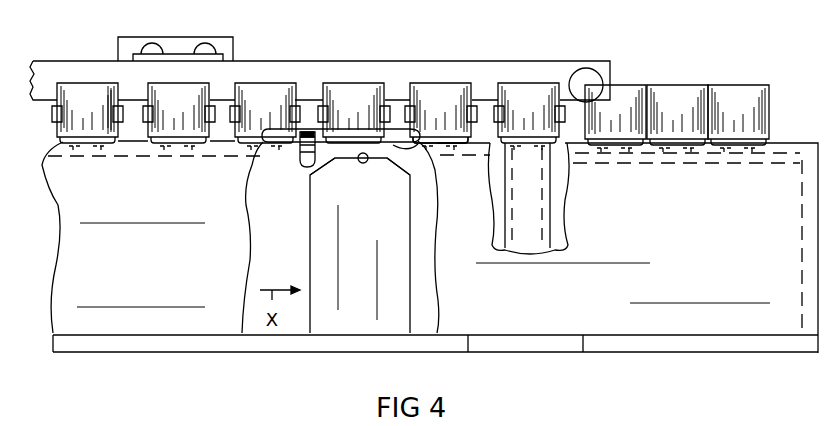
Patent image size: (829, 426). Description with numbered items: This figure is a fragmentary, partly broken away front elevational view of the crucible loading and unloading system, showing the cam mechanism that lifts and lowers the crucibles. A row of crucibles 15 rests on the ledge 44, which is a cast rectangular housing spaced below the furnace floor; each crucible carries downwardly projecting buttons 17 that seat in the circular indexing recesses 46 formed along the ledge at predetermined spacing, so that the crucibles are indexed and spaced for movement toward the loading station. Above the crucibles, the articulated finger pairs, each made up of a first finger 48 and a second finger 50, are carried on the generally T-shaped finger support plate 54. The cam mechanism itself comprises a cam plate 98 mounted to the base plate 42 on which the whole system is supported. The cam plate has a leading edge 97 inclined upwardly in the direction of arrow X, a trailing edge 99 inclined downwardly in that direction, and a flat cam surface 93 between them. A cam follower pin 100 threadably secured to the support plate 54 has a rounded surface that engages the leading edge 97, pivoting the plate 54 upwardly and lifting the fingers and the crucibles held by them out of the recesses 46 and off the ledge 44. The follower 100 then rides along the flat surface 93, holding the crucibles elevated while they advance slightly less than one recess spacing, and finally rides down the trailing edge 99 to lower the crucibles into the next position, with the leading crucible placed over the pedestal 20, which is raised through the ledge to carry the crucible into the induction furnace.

The crucible 15 is at (84, 95).
The second finger 50 is at (109, 88).
The first finger 48 is at (52, 113).
The finger support plate 54 is at (428, 140).
The downwardly projecting button 17 is at (81, 150).
The indexing recess 46 is at (165, 162).
The ledge 44 is at (805, 143).
The pedestal 20 is at (545, 203).
The base plate 42 is at (106, 340).
The cam plate 98 is at (313, 256).
The leading edge 97 is at (321, 166).
The trailing edge 99 is at (401, 170).
The flat cam surface 93 is at (364, 163).
The cam follower pin 100 is at (300, 166).